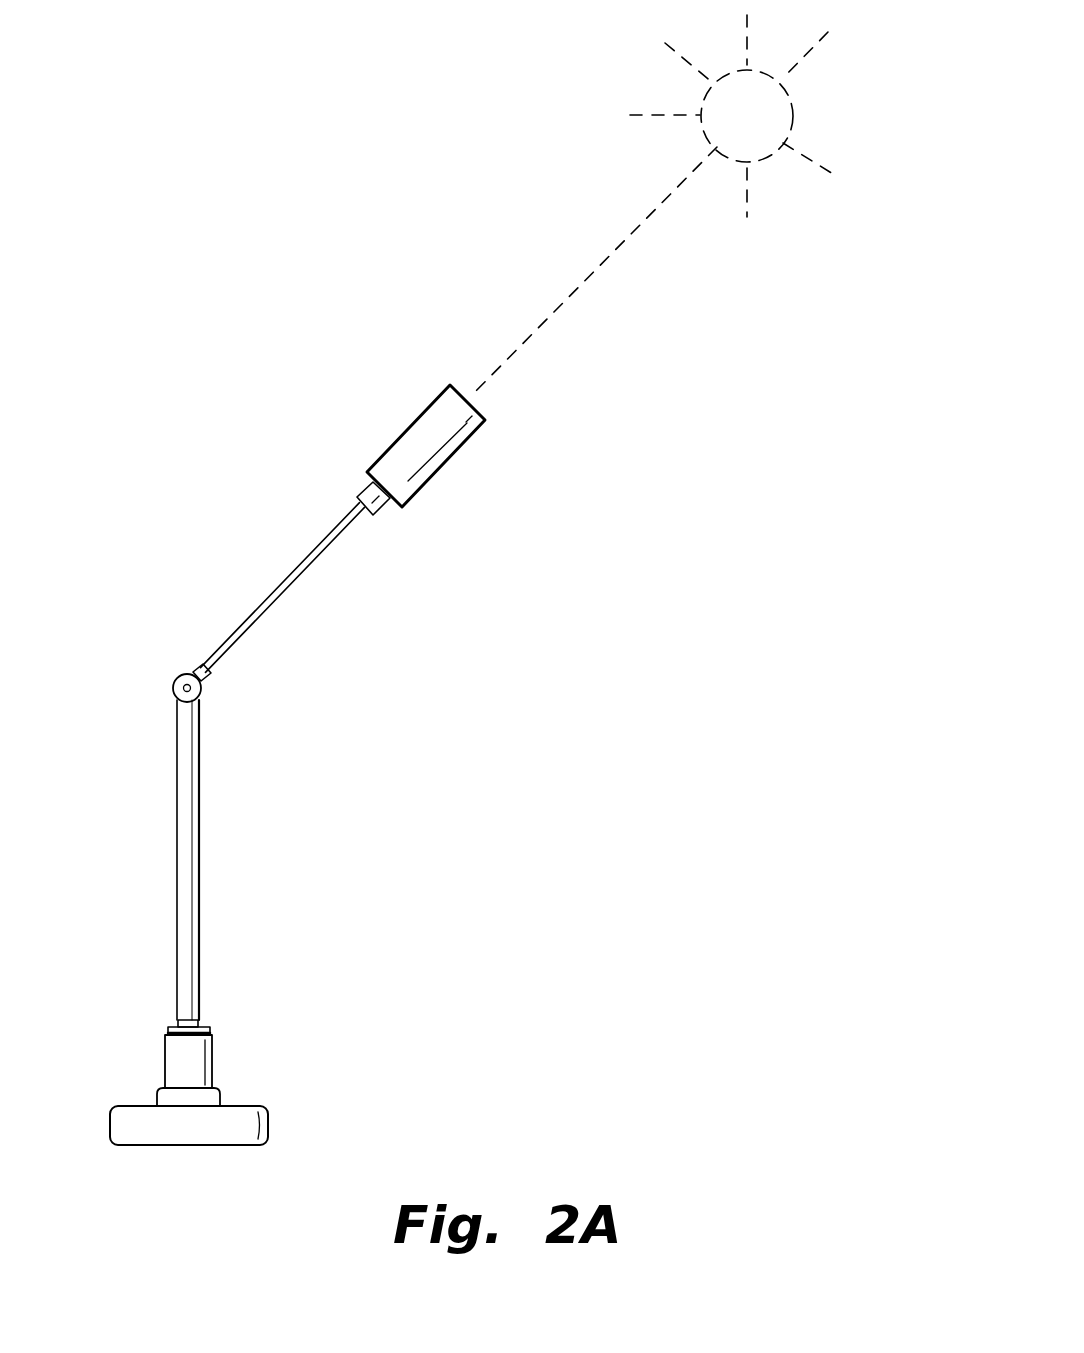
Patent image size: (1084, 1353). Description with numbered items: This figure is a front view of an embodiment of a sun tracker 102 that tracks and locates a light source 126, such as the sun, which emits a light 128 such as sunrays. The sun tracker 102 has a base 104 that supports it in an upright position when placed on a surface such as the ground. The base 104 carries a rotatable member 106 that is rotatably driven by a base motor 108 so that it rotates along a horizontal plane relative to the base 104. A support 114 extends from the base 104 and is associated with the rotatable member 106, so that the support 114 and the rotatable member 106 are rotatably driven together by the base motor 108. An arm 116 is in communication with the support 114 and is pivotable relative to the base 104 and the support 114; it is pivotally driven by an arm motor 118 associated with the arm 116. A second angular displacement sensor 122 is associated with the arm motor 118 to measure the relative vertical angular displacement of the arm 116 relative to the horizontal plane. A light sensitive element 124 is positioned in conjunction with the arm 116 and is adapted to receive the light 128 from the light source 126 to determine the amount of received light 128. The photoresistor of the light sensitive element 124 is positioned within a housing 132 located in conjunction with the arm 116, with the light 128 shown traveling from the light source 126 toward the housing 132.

The sun tracker 102 is at (200, 445).
The base 104 is at (265, 1110).
The rotatable member 106 is at (150, 1058).
The base motor 108 is at (200, 1095).
The support 114 is at (199, 897).
The arm 116 is at (293, 588).
The arm motor 118 is at (245, 738).
The second angular displacement sensor 122 is at (205, 680).
The light sensitive element 124 is at (455, 437).
The light source 126 is at (793, 105).
The light 128 is at (633, 230).
The housing 132 is at (408, 428).